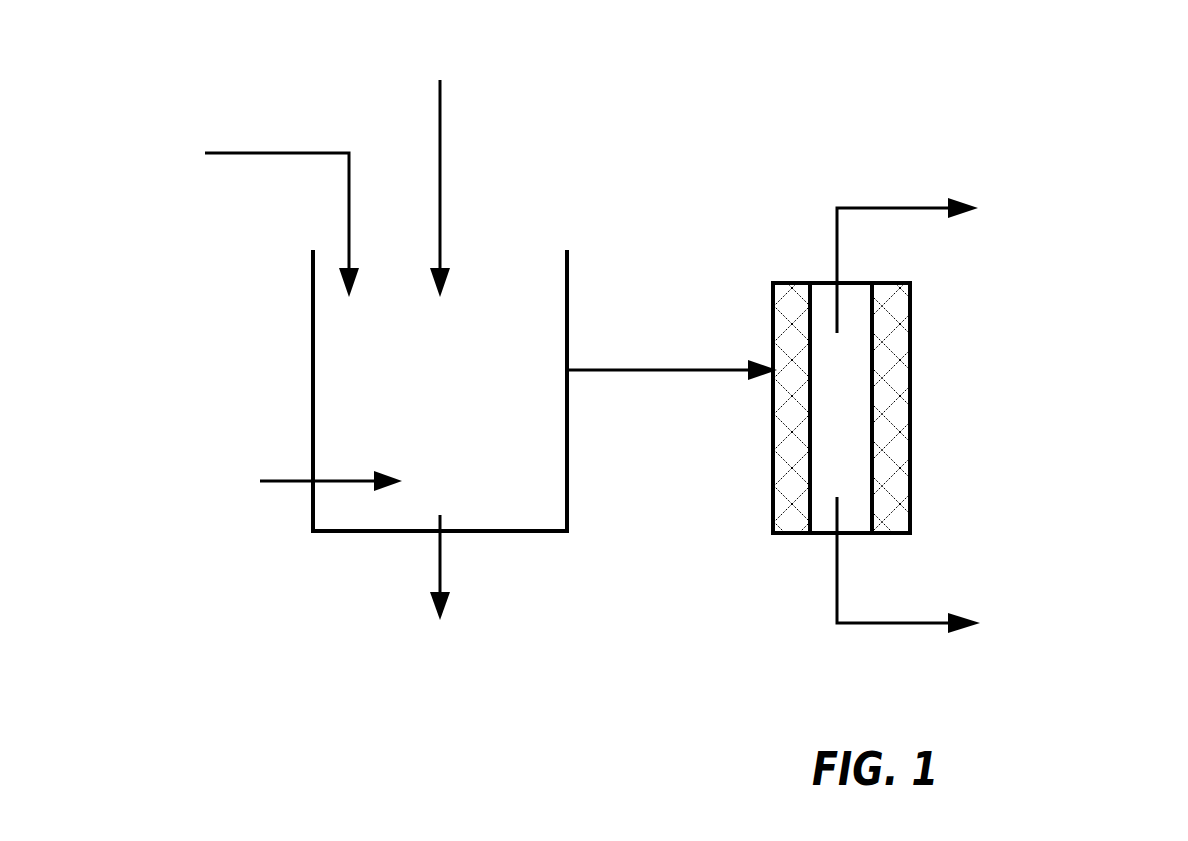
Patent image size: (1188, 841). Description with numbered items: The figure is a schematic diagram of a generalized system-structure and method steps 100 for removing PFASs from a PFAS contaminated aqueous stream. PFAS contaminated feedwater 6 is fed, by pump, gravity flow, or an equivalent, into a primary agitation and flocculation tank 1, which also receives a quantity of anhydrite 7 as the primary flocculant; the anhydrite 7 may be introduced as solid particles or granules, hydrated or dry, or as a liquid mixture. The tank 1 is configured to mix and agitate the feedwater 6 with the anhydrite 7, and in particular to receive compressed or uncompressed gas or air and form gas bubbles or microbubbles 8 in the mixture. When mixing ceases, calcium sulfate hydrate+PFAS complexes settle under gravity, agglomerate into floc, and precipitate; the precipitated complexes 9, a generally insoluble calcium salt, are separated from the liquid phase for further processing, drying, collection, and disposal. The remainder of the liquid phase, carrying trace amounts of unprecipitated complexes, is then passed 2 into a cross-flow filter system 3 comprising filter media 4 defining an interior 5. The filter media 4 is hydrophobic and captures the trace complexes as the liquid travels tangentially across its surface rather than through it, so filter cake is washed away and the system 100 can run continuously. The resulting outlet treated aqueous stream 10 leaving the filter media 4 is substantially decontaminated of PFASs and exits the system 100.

The primary agitation and flocculation tank 1 is at (440, 390).
The passage of the liquid phase to the cross-flow filter system 2 is at (672, 390).
The cross-flow filter system 3 is at (935, 408).
The filter media 4 is at (792, 408).
The interior 5 is at (871, 408).
The PFAS contaminated feedwater 6 is at (238, 175).
The anhydrite 7 is at (466, 159).
The gas bubbles or microbubbles 8 is at (219, 479).
The calcium sulfate hydrate+PFAS complexes 9 is at (441, 616).
The outlet treated aqueous stream 10 is at (994, 431).
The system for removing PFASs 100 is at (670, 311).